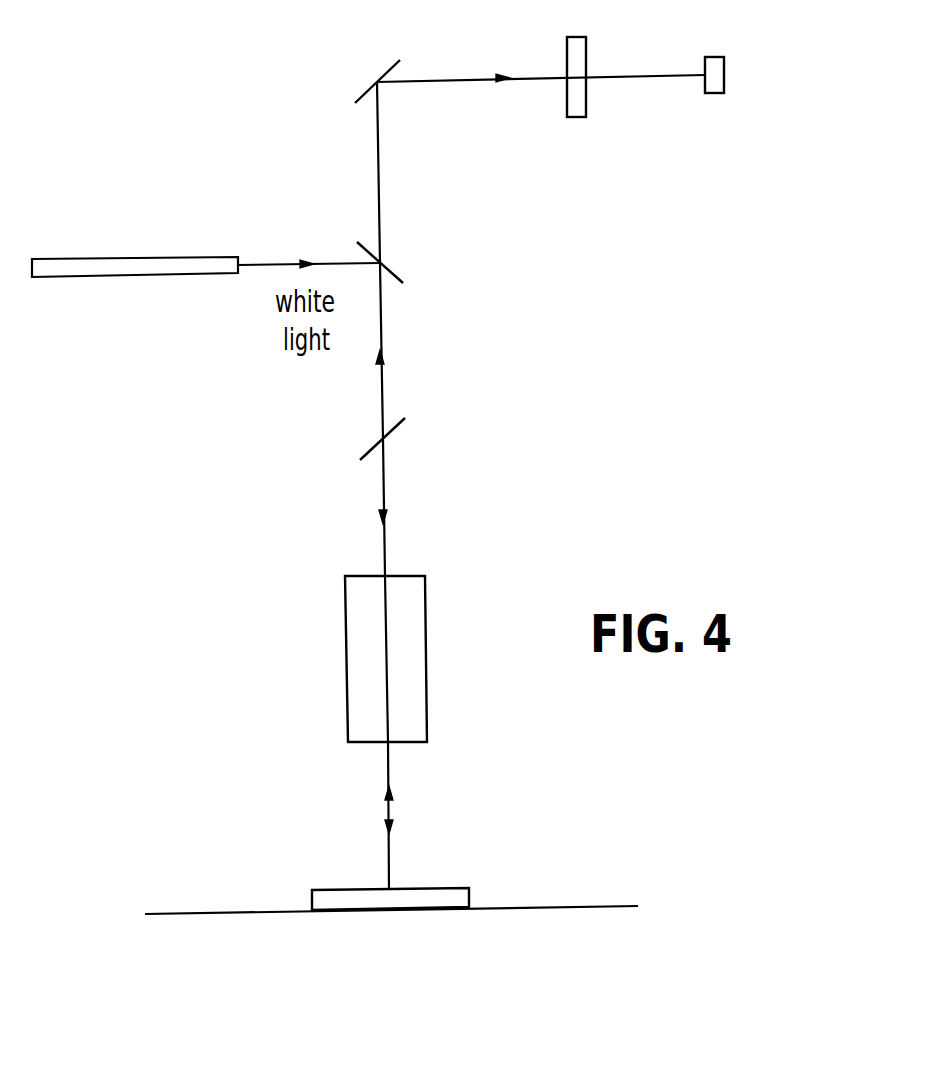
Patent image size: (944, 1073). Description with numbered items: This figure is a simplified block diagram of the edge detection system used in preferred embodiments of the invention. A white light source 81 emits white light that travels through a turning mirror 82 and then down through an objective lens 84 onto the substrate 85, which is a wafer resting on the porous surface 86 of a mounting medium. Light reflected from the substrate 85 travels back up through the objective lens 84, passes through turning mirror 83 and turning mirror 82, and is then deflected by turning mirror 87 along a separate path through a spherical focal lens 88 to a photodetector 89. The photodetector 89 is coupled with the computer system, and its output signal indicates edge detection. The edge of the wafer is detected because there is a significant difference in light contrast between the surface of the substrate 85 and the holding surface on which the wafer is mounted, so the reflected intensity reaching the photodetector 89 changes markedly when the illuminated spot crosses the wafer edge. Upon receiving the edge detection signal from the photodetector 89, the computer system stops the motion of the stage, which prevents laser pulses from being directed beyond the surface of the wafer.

The white light source 81 is at (135, 284).
The turning mirror 82 is at (397, 253).
The turning mirror 83 is at (393, 422).
The objective lens 84 is at (403, 659).
The substrate 85 is at (408, 886).
The porous surface 86 is at (398, 891).
The turning mirror 87 is at (363, 90).
The spherical focal lens 88 is at (576, 37).
The photodetector 89 is at (714, 57).